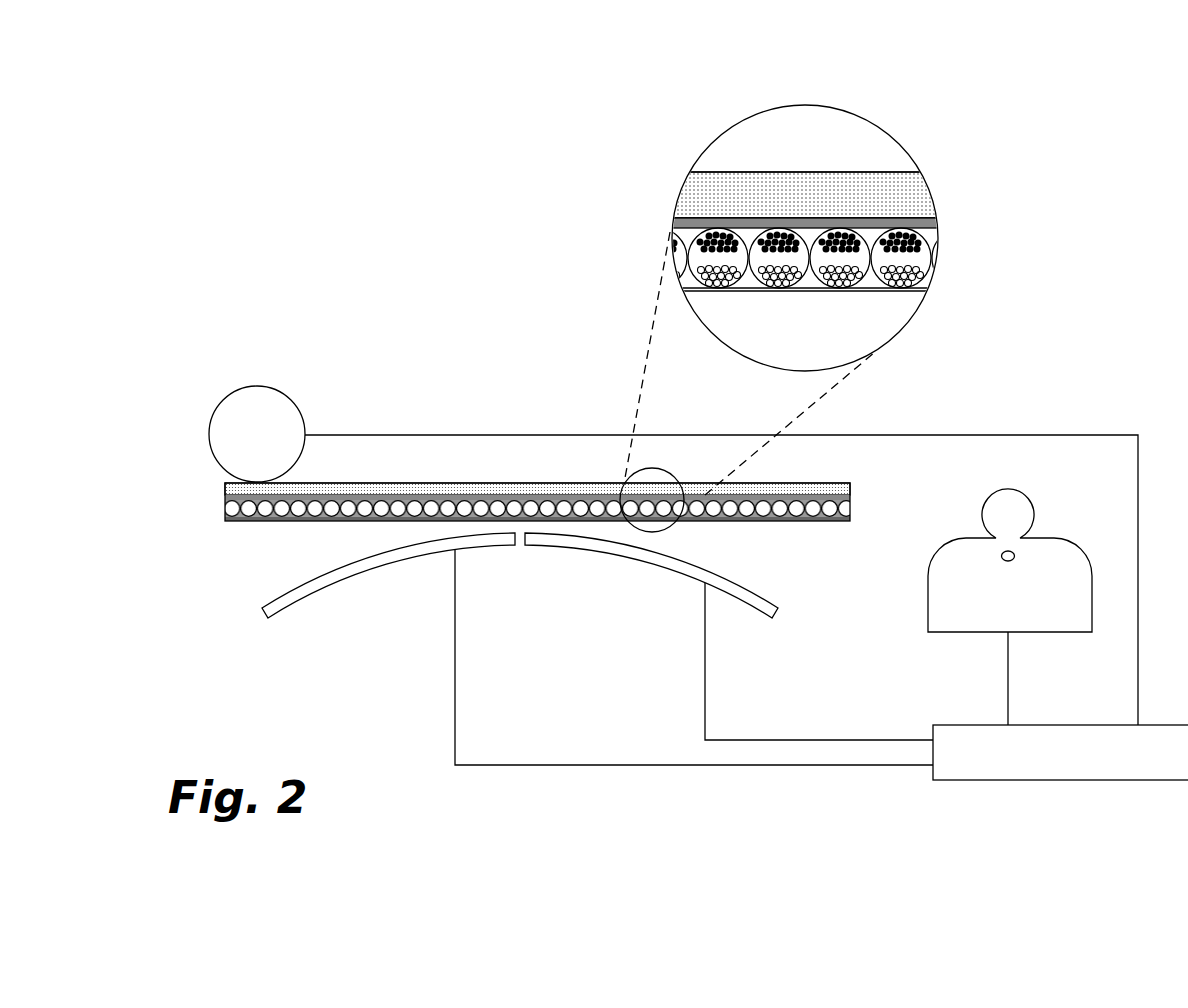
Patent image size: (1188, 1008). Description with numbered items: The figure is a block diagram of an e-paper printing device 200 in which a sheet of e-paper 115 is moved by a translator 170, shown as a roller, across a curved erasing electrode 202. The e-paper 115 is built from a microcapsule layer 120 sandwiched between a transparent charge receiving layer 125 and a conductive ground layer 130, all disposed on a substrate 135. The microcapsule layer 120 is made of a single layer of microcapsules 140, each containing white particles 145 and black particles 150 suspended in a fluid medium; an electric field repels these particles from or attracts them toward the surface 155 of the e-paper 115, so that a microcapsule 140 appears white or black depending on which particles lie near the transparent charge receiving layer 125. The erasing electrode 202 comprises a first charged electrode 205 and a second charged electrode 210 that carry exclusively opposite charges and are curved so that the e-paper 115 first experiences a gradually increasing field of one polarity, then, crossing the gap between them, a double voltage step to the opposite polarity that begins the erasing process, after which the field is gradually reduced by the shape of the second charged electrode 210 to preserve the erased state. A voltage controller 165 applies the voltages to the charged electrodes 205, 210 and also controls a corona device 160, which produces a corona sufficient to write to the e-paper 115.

The e-paper printing device 200 is at (245, 170).
The e-paper 115 is at (215, 480).
The microcapsule layer 120 is at (804, 183).
The transparent charge receiving layer 125 is at (923, 292).
The conductive ground layer 130 is at (935, 222).
The substrate 135 is at (913, 188).
The microcapsules 140 is at (823, 232).
The white particles 145 is at (918, 277).
The black particles 150 is at (927, 242).
The surface 155 is at (777, 298).
The corona device 160 is at (950, 642).
The voltage controller 165 is at (1052, 774).
The translator 170 is at (248, 410).
The erasing electrode 202 is at (483, 597).
The first charged electrode 205 is at (280, 625).
The second charged electrode 210 is at (647, 575).